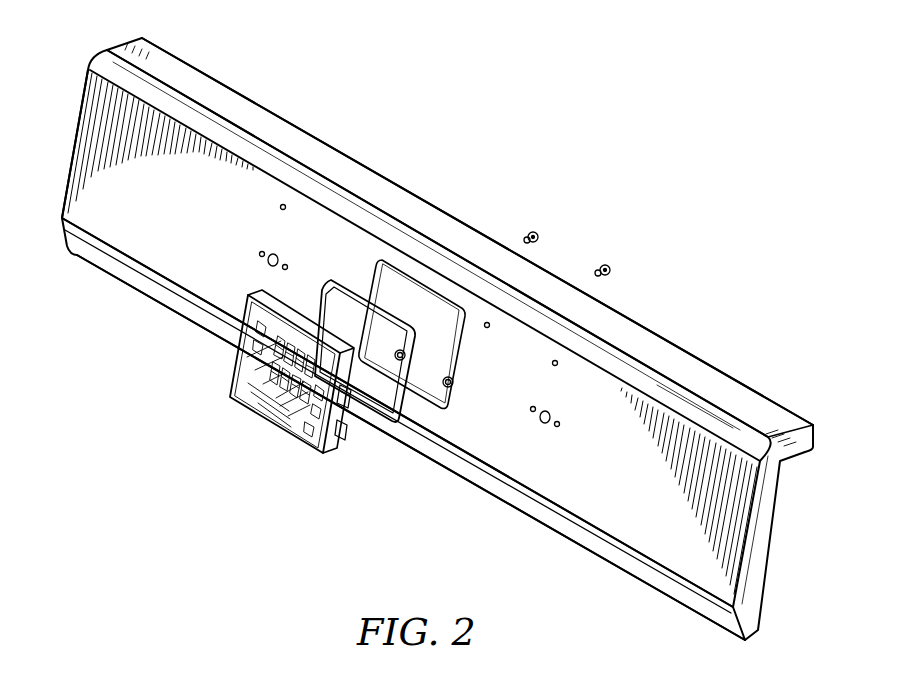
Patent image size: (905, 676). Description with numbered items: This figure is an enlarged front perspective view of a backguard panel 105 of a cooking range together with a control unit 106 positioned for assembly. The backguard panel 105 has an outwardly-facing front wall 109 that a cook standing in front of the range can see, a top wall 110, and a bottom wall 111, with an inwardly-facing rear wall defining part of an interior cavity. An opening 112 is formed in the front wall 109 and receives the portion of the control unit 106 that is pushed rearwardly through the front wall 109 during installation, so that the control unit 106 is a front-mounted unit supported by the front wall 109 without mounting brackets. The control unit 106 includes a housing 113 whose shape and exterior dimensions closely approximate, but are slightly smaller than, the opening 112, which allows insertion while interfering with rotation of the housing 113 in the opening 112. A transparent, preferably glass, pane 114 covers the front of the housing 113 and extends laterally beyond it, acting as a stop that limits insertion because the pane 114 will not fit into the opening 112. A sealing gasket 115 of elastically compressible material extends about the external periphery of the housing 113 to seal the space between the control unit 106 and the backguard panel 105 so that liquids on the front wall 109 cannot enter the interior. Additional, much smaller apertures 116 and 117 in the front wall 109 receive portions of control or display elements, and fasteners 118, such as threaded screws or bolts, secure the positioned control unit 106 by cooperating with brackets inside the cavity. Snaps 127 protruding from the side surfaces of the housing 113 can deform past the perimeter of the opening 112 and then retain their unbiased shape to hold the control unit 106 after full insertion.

The backguard panel 105 is at (813, 427).
The control unit 106 is at (297, 418).
The front wall 109 is at (103, 180).
The top wall 110 is at (213, 95).
The bottom wall 111 is at (143, 282).
The opening 112 is at (433, 315).
The housing 113 is at (338, 437).
The transparent pane 114 is at (228, 392).
The sealing gasket 115 is at (400, 427).
The additional aperture 116 is at (286, 200).
The additional aperture 117 is at (546, 428).
The fasteners 118 is at (615, 265).
The snaps 127 is at (348, 412).